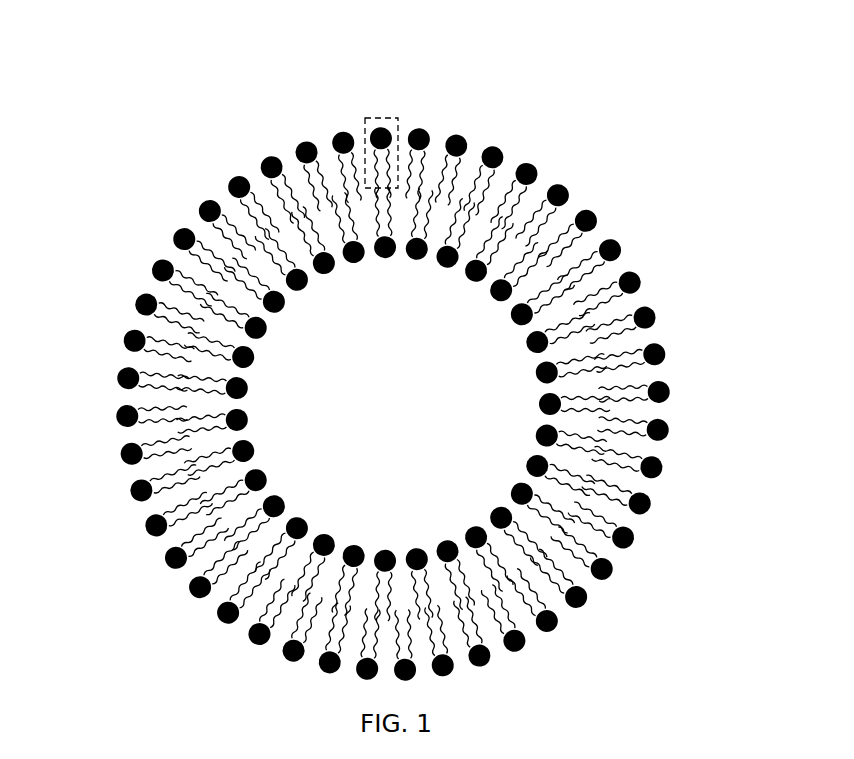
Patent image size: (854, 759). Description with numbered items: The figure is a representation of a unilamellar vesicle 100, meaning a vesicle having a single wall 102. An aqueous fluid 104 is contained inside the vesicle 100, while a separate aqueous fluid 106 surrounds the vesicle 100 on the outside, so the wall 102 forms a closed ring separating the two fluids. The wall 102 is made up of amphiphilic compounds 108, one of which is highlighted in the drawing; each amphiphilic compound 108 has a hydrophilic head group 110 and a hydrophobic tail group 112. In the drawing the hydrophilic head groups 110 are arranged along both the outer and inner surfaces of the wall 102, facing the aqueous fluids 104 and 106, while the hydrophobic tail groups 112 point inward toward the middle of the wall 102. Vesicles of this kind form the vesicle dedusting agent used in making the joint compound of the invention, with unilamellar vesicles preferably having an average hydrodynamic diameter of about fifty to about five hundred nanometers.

The unilamellar vesicle 100 is at (140, 61).
The wall 102 is at (172, 260).
The aqueous fluid inside the vesicle 104 is at (414, 408).
The aqueous fluid outside the vesicle 106 is at (690, 635).
The amphiphilic compound 108 is at (383, 118).
The hydrophilic head group 110 is at (617, 247).
The hydrophobic tail group 112 is at (643, 402).